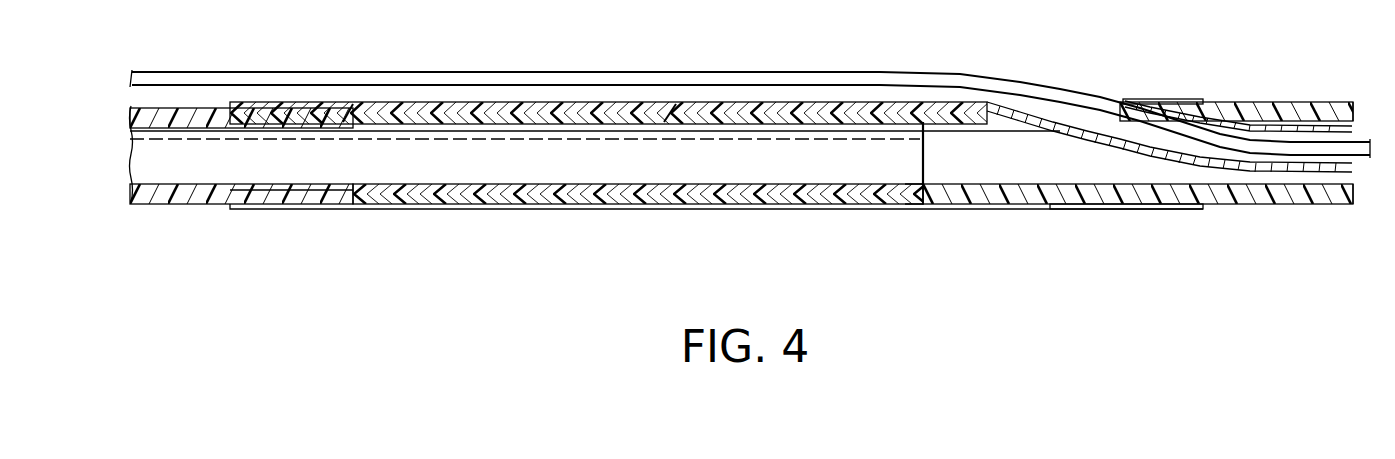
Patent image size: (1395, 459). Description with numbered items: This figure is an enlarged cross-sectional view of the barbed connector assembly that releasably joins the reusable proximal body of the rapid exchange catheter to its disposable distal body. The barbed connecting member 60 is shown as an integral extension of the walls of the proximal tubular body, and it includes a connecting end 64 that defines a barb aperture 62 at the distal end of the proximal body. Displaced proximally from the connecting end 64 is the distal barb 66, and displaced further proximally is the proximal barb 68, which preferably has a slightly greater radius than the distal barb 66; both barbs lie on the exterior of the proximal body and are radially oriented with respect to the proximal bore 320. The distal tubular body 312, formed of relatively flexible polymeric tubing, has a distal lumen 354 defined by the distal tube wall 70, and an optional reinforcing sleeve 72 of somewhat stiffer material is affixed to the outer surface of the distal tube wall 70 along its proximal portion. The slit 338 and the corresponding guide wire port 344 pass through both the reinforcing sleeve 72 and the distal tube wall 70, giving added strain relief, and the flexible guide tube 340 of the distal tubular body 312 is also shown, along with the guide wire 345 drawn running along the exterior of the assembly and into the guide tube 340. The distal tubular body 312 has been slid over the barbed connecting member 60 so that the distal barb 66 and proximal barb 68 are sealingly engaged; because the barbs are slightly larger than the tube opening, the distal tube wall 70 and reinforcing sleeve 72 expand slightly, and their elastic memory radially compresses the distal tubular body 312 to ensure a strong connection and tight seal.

The distal tubular body 312 is at (290, 225).
The proximal bore 320 is at (510, 166).
The proximal barb 68 is at (353, 112).
The distal barb 66 is at (672, 106).
The barbed connecting member 60 is at (637, 221).
The barb aperture 62 is at (927, 166).
The connecting end 64 is at (918, 188).
The distal lumen 354 is at (1028, 158).
The guide wire port 344 is at (1042, 112).
The flexible guide tube 340 is at (1296, 162).
The distal tube wall 70 is at (1238, 198).
The slit 338 is at (1160, 101).
The reinforcing sleeve 72 is at (1143, 208).
The pull wire 345 is at (207, 72).